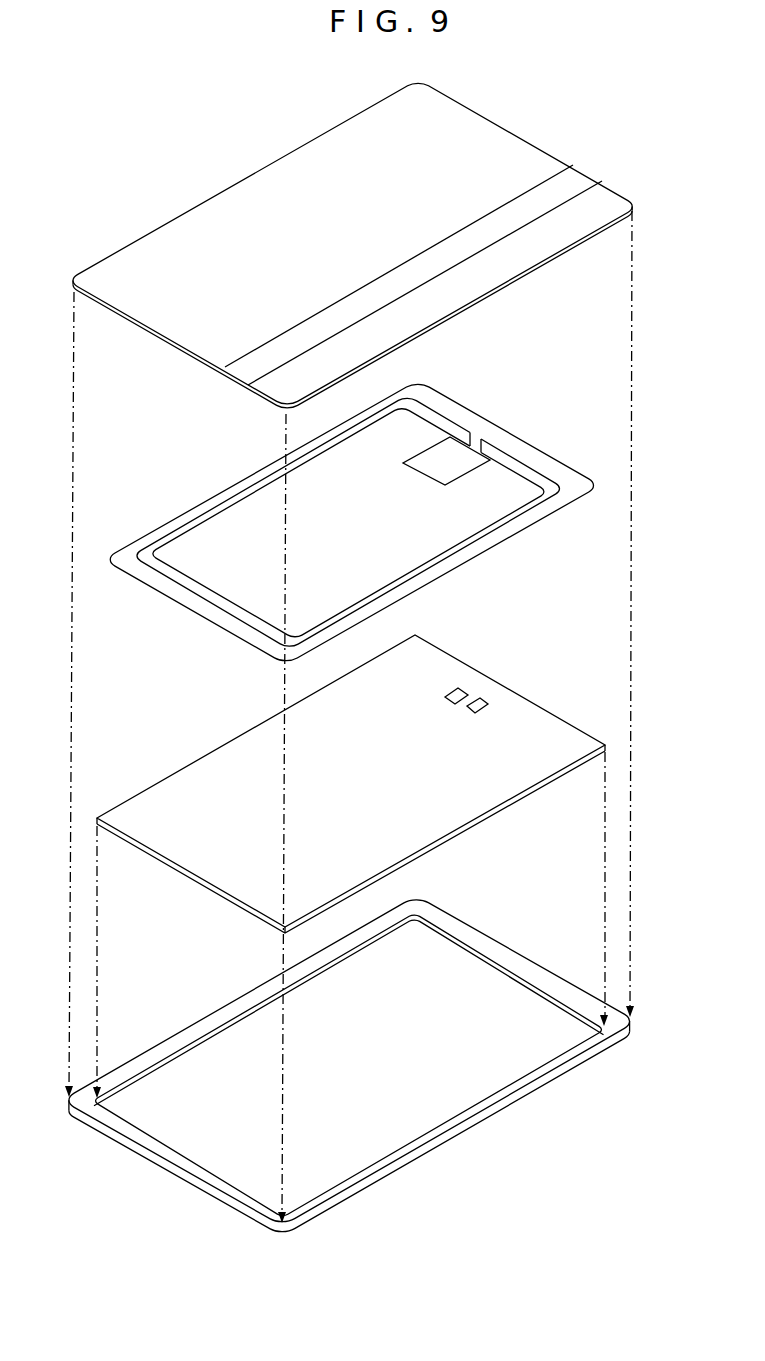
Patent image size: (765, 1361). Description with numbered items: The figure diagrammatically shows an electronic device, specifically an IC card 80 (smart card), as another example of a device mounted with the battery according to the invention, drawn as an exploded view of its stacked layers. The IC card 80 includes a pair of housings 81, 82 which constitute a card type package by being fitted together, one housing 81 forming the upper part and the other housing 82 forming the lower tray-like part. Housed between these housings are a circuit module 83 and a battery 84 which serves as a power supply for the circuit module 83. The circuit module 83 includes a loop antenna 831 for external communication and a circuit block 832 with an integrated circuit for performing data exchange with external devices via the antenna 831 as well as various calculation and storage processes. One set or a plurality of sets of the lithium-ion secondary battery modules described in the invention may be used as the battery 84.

The IC card 80 is at (131, 109).
The housing 81 is at (172, 241).
The housing 82 is at (168, 1176).
The circuit module 83 is at (465, 403).
The loop antenna 831 is at (223, 501).
The circuit block 832 is at (456, 470).
The battery 84 is at (505, 689).